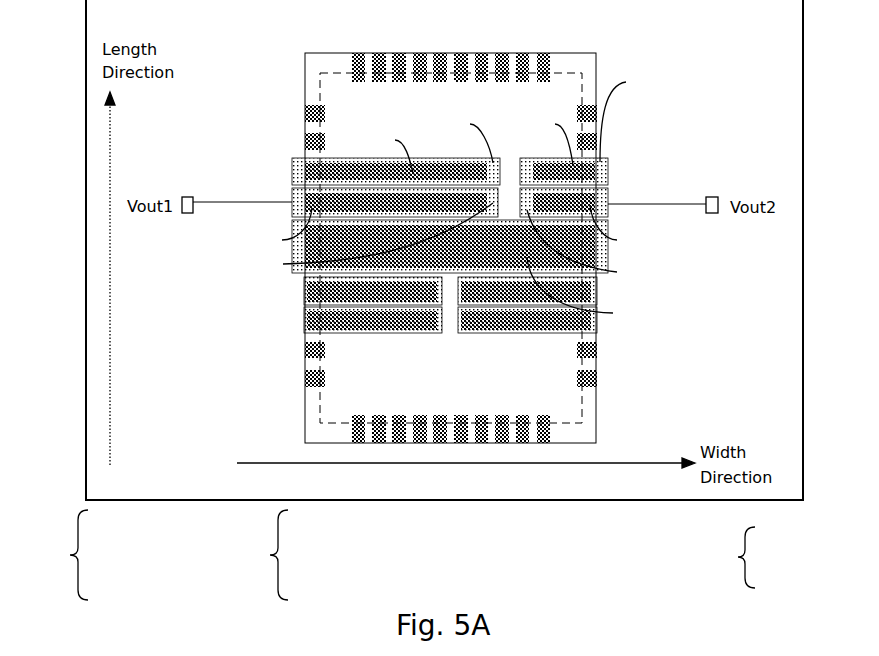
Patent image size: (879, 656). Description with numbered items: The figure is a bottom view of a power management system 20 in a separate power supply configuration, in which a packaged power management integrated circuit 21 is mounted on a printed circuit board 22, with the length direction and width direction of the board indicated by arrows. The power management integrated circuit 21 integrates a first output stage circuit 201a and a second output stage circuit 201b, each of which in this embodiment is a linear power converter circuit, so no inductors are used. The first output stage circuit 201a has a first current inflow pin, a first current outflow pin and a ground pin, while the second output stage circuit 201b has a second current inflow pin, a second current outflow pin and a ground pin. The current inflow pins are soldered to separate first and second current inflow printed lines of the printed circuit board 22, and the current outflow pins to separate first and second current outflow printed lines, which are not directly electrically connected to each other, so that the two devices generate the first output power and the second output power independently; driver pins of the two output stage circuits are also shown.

The power management system 20 is at (741, 559).
The power management integrated circuit (PMIC) 21 is at (335, 58).
The printed circuit board (PCB) 22 is at (150, 463).
The first output stage circuit 201a is at (80, 555).
The second output stage circuit 201b is at (279, 555).